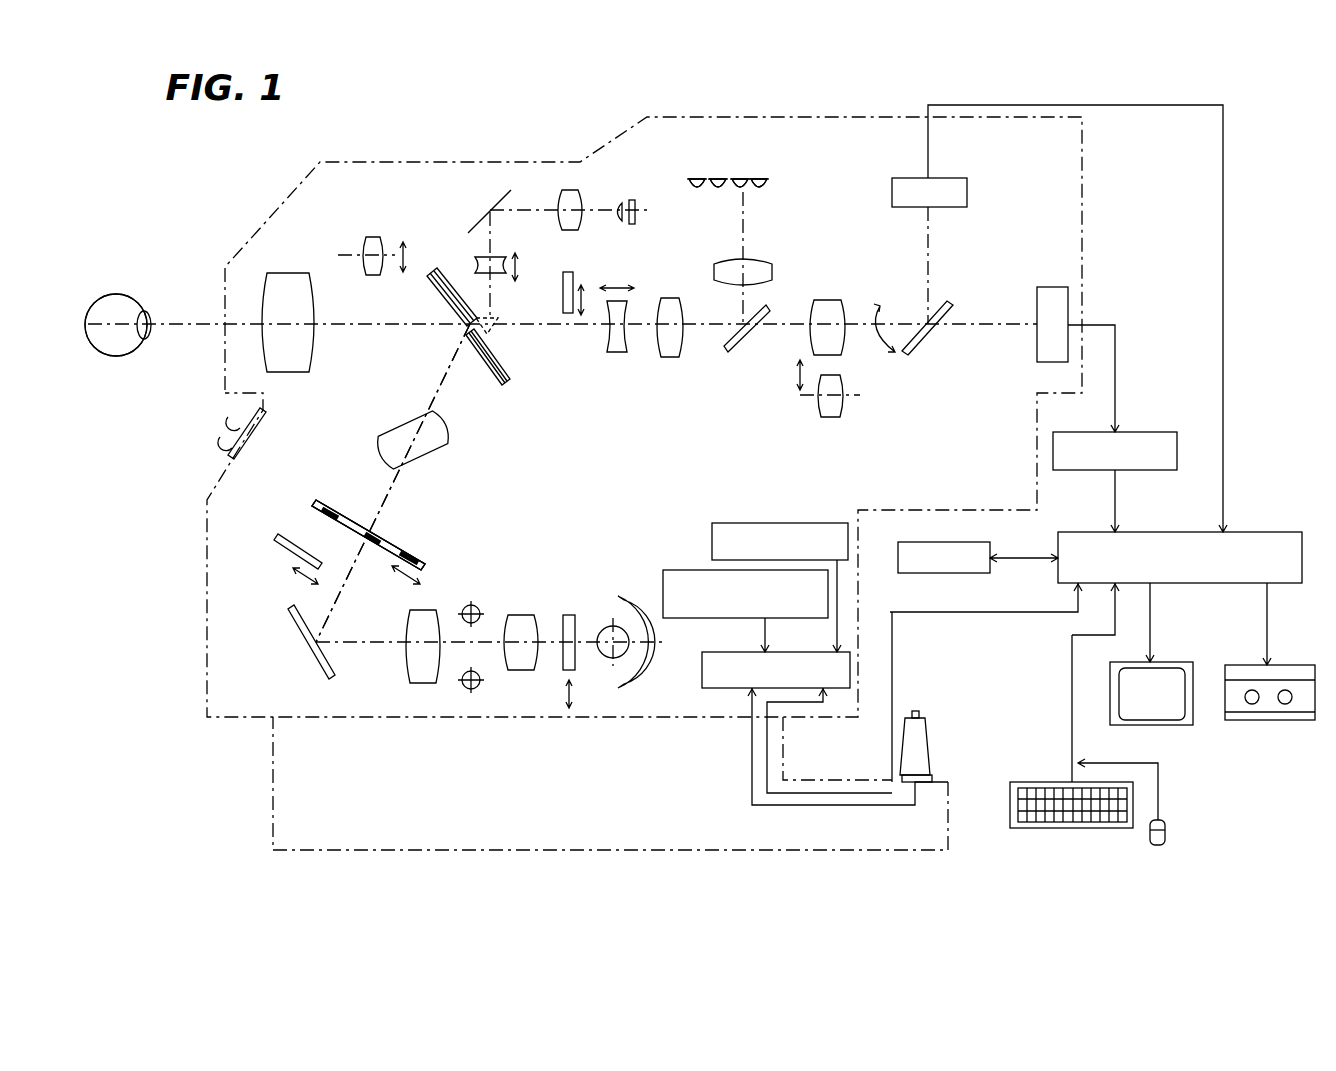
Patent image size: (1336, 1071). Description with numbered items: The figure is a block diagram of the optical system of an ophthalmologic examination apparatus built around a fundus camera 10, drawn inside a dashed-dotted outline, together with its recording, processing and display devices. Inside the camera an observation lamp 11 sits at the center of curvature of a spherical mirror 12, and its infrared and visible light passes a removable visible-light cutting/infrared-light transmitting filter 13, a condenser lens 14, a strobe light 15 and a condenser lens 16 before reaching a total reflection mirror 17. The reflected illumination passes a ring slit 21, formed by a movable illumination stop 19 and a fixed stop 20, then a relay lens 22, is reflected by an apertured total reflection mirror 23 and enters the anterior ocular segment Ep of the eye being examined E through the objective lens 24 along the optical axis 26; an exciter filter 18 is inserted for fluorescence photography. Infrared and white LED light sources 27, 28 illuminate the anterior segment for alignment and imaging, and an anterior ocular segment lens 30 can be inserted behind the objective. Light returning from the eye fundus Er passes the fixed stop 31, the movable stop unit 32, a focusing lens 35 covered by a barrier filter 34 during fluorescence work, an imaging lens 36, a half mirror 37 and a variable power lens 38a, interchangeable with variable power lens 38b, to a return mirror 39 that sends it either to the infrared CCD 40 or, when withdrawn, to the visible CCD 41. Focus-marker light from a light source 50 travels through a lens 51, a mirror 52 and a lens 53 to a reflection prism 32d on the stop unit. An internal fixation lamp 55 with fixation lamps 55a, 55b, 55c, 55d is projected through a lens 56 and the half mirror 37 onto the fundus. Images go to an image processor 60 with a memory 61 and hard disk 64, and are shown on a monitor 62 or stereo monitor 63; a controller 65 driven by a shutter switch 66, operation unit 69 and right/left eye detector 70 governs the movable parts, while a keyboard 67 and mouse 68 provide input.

The fundus camera 10 is at (571, 141).
The observation lamp 11 is at (604, 628).
The spherical mirror 12 is at (622, 594).
The visible-light cutting/infrared-light transmitting filter 13 is at (566, 612).
The condenser lens 14 is at (520, 612).
The strobe light 15 is at (473, 600).
The condenser lens 16 is at (410, 660).
The total reflection mirror 17 is at (313, 650).
The exciter filter 18 is at (285, 540).
The movable illumination stop 19 is at (378, 548).
The fixed stop 20 is at (350, 505).
The ring slit 21 is at (408, 541).
The relay lens 22 is at (445, 455).
The apertured total reflection mirror 23 is at (490, 367).
The objective lens 24 is at (295, 275).
The optical axis 26 is at (372, 330).
The light source 27 is at (236, 420).
The light source 28 is at (225, 445).
The anterior ocular segment lens 30 is at (372, 236).
The fixed stop 31 is at (495, 350).
The movable stop unit 32 is at (440, 268).
The reflection prism 32d is at (496, 326).
The barrier filter 34 is at (570, 270).
The focusing lens 35 is at (617, 354).
The imaging lens 36 is at (677, 358).
The half mirror 37 is at (745, 338).
The variable power lens 38a is at (828, 300).
The variable power lens 38b is at (832, 418).
The return mirror 39 is at (928, 338).
The CCD 40 is at (968, 192).
The CCD 41 is at (1036, 300).
The focus-marker light source 50 is at (637, 212).
The lens 51 is at (580, 196).
The mirror 52 is at (482, 214).
The lens 53 is at (505, 258).
The internal fixation lamp 55 is at (772, 171).
The fixation lamp 55a is at (695, 178).
The fixation lamp 55b is at (716, 178).
The fixation lamp 55c is at (739, 178).
The fixation lamp 55d is at (758, 178).
The lens 56 is at (752, 258).
The image processor 60 is at (1180, 530).
The memory 61 is at (1132, 430).
The monitor 62 is at (1165, 660).
The stereo monitor 63 is at (1233, 722).
The hard disk 64 is at (975, 547).
The controller 65 is at (703, 688).
The shutter switch 66 is at (919, 712).
The keyboard 67 is at (1055, 830).
The mouse 68 is at (1158, 846).
The operation unit 69 is at (800, 522).
The right/left eye detector 70 is at (690, 568).
The eye being examined E is at (102, 300).
The anterior ocular segment Ep is at (150, 310).
The eye fundus Er is at (95, 355).